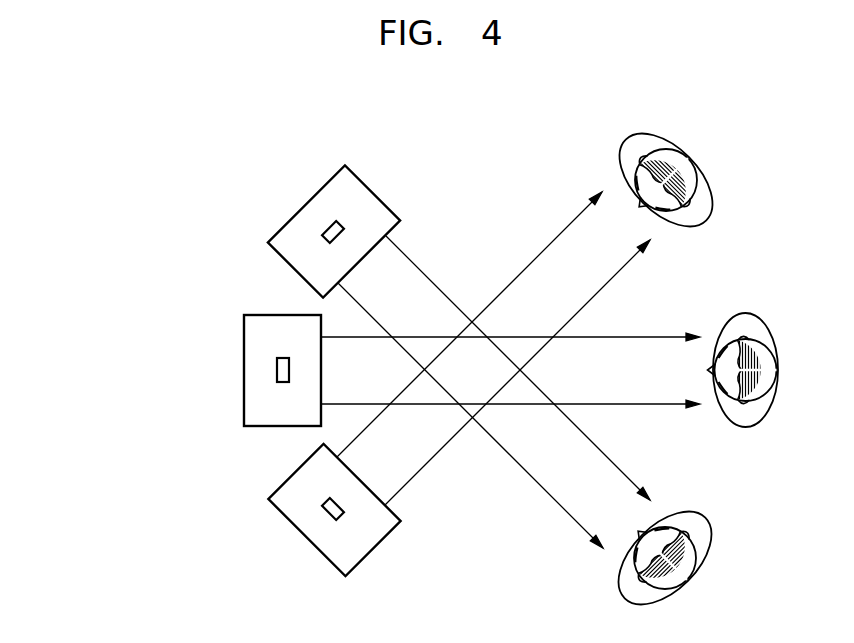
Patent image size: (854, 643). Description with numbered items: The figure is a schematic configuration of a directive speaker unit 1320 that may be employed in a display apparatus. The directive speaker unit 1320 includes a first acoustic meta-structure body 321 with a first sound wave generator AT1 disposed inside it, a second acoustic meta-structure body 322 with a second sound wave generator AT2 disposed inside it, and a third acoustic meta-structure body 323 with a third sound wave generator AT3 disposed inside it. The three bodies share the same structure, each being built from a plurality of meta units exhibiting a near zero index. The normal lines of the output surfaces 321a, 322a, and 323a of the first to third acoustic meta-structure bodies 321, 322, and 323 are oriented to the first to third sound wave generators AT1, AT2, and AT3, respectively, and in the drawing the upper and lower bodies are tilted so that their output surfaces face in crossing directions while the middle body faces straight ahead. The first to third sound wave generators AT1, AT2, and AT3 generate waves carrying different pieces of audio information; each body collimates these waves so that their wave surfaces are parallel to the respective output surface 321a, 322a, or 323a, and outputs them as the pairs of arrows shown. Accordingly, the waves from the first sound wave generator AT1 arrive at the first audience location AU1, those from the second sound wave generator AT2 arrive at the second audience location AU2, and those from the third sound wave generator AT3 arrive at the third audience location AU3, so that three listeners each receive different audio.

The directive speaker unit 1320 is at (196, 147).
The first acoustic meta-structure body 321 is at (375, 196).
The output surface of the first acoustic meta-structure body 321a is at (360, 261).
The second acoustic meta-structure body 322 is at (256, 327).
The output surface of the second acoustic meta-structure body 322a is at (321, 370).
The third acoustic meta-structure body 323 is at (350, 553).
The output surface of the third acoustic meta-structure body 323a is at (367, 487).
The first sound wave generator AT1 is at (323, 231).
The second sound wave generator AT2 is at (277, 370).
The third sound wave generator AT3 is at (322, 514).
The first audience location AU1 is at (670, 556).
The second audience location AU2 is at (771, 370).
The third audience location AU3 is at (671, 182).